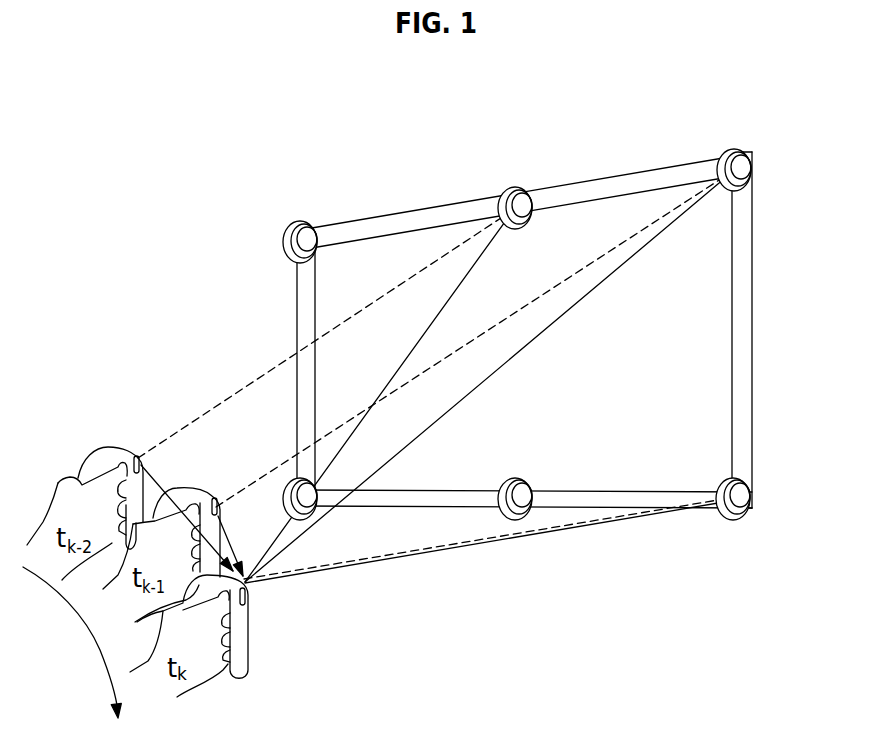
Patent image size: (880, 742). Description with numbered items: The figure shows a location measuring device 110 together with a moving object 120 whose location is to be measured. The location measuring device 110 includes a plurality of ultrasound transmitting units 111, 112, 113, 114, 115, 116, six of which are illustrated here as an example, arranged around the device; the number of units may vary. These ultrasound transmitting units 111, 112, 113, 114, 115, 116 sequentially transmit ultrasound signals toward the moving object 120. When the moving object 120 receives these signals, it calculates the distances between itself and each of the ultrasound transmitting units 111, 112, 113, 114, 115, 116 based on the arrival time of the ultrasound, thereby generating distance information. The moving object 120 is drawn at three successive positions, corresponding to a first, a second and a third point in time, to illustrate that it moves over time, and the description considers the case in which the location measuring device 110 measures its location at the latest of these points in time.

The location measuring device 110 is at (753, 318).
The ultrasound transmitting unit 111 is at (507, 189).
The ultrasound transmitting unit 112 is at (724, 151).
The ultrasound transmitting unit 113 is at (735, 521).
The ultrasound transmitting unit 114 is at (515, 521).
The ultrasound transmitting unit 115 is at (302, 521).
The ultrasound transmitting unit 116 is at (283, 235).
The moving object 120 is at (110, 446).